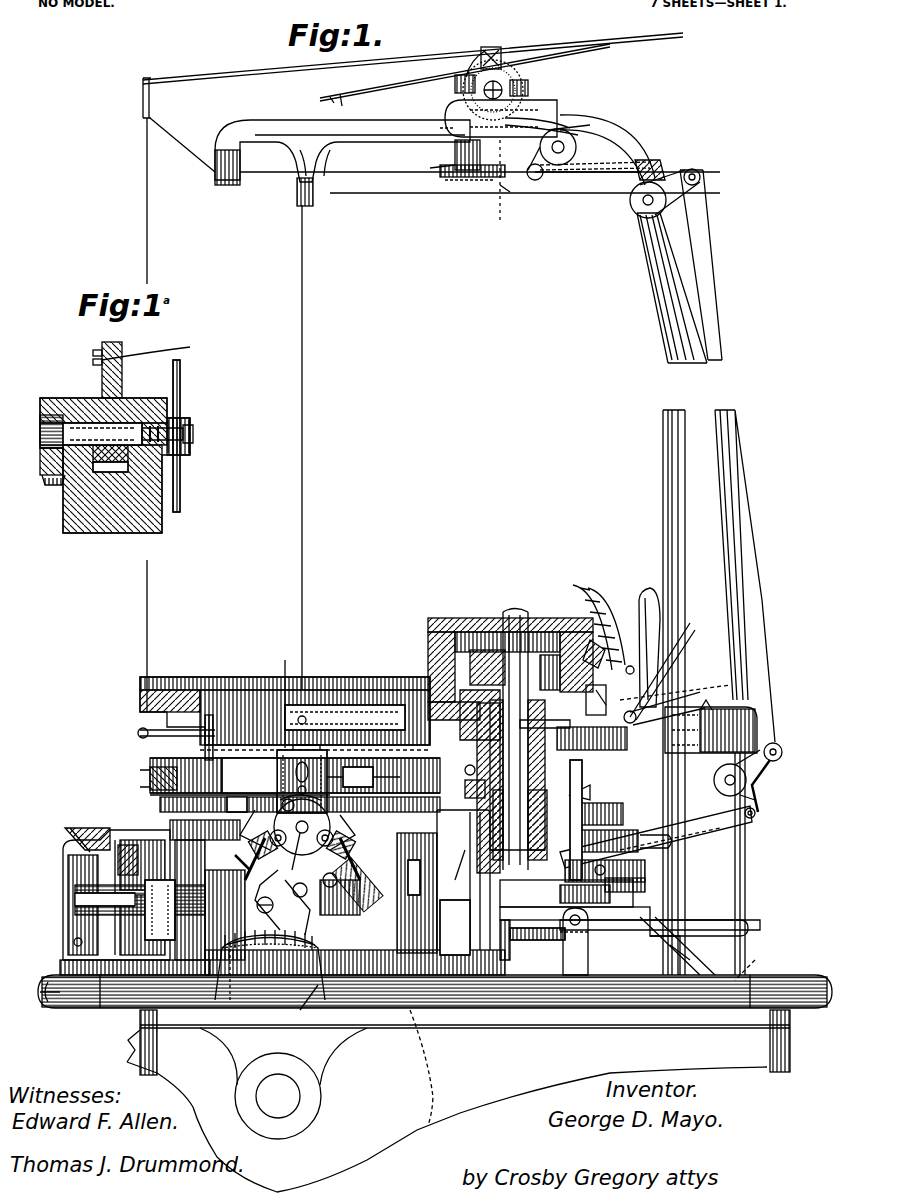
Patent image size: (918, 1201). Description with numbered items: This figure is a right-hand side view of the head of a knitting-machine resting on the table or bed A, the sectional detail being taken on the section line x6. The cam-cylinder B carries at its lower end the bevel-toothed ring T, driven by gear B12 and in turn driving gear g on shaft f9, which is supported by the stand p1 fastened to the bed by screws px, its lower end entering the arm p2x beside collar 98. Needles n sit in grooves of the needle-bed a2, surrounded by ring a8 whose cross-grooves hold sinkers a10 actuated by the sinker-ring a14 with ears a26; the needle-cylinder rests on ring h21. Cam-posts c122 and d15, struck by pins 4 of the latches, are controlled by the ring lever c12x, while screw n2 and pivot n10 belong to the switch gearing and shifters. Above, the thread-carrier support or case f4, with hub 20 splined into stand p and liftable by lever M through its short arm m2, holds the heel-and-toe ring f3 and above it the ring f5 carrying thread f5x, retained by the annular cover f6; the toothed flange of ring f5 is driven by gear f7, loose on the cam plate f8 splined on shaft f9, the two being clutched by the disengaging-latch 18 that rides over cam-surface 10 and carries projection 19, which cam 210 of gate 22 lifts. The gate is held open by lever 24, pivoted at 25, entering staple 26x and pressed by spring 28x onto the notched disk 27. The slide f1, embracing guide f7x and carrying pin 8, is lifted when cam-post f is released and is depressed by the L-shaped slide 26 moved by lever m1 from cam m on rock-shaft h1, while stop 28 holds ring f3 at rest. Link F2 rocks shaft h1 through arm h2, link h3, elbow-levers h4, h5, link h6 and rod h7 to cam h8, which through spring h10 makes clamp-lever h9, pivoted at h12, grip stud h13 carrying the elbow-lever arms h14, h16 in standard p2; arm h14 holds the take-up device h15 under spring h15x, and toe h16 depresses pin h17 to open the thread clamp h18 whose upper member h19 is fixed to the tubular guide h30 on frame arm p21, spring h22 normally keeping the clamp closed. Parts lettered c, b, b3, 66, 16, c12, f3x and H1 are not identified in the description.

In FIG. 1, the take-up device h15 is at (215, 64).
In FIG. 1A, the take-up device h15 is at (158, 394).
In FIG. 1, the spring h15x is at (326, 102).
In FIG. 1A, the spring h15x is at (180, 387).
In FIG. 1, the stationary frame arm p21 is at (248, 118).
In FIG. 1, the arm of elbow-lever h14 is at (495, 45).
In FIG. 1A, the arm of elbow-lever h14 is at (122, 352).
In FIG. 1, the toe arm of elbow-lever h16 is at (460, 75).
In FIG. 1, the short stud h13 is at (505, 96).
In FIG. 1A, the short stud h13 is at (60, 432).
In FIG. 1, the pivot of clamp-lever h12 is at (447, 104).
In FIG. 1, the clamp-lever h9 is at (545, 118).
In FIG. 1A, the clamp-lever h9 is at (43, 468).
In FIG. 1, the spring h10 is at (570, 150).
In FIG. 1A, the spring h10 is at (50, 488).
In FIG. 1, the cam h8 is at (605, 140).
In FIG. 1, the pin h17 is at (440, 128).
In FIG. 1, the upper clamp member h19 is at (430, 168).
In FIG. 1, the tubular guide h30 is at (483, 150).
In FIG. 1, the thread clamp or tension device h18 is at (445, 182).
In FIG. 1, the spiral spring h22 is at (477, 202).
In FIG. 1, the section line x6 is at (502, 194).
In FIG. 1, the short rod h7 is at (582, 175).
In FIG. 1, the elbow-lever h5 is at (648, 208).
In FIG. 1, the link h6 is at (762, 575).
In FIG. 1, the standard p2 is at (665, 470).
In FIG. 1, the cam-post f is at (390, 1040).
In FIG. 1, the hand-operated lever M is at (640, 595).
In FIG. 1, the thread for circular knitting f5x is at (305, 446).
In FIG. 1, the thread-carrier support or case f4 is at (375, 690).
In FIG. 1, the annular cover f6 is at (165, 677).
In FIG. 1, the thread carrier or ring f5 is at (205, 680).
In FIG. 1, the guide f7x is at (281, 693).
In FIG. 1, the gear f7 is at (430, 680).
In FIG. 1, the projection of disengaging-latch 19 is at (428, 662).
In FIG. 1, the pin f3x is at (205, 735).
In FIG. 1, the thread carrier or ring f3 is at (315, 750).
In FIG. 1, the needles n is at (327, 752).
In FIG. 1, the jacks or sinkers a10 is at (200, 735).
In FIG. 1, the slide f1 is at (285, 775).
In FIG. 1, the actuating-ears a26 is at (150, 776).
In FIG. 1, the sinker-ring a14 is at (150, 795).
In FIG. 1, the ring a8 is at (195, 800).
In FIG. 1, the needle-bed a2 is at (190, 825).
In FIG. 1, the wheel c is at (262, 825).
In FIG. 1, the projecting pins of depressor-latches 4 is at (241, 855).
In FIG. 1, the pin of slide 8 is at (295, 805).
In FIG. 1, the screw b3 is at (254, 901).
In FIG. 1, the screws 66 is at (315, 891).
In FIG. 1, the arm b is at (313, 896).
In FIG. 1, the cam-post d15 is at (81, 829).
In FIG. 1, the screw n2 is at (120, 862).
In FIG. 1, the pivot of switch-shifters n10 is at (75, 893).
In FIG. 1, the bevel-toothed ring T is at (270, 965).
In FIG. 1, the toothed gear B12 is at (435, 1128).
In FIG. 1, the table or bed A is at (785, 978).
In FIG. 1, the bracket H1 is at (458, 1101).
In FIG. 1, the cam-post c122 is at (305, 1010).
In FIG. 1, the cam plate f8 is at (495, 618).
In FIG. 1, the shaft f9 is at (527, 618).
In FIG. 1, the disengaging-latch 18 is at (545, 650).
In FIG. 1, the cam-surface 10 is at (580, 588).
In FIG. 1, the gate 22 is at (610, 642).
In FIG. 1, the cam 210 is at (603, 685).
In FIG. 1, the block 16 is at (596, 690).
In FIG. 1, the staple 26x is at (668, 668).
In FIG. 1, the spring 28x is at (640, 690).
In FIG. 1, the stop 28 is at (465, 745).
In FIG. 1, the lever 24 is at (660, 698).
In FIG. 1, the pivot of lever 25 is at (670, 710).
In FIG. 1, the disk 27 is at (470, 785).
In FIG. 1, the L-shaped slide 26 is at (462, 767).
In FIG. 1, the stand p1 is at (745, 725).
In FIG. 1, the elbow-lever h4 is at (760, 772).
In FIG. 1, the link h3 is at (720, 825).
In FIG. 1, the vertical rock-shaft h1 is at (600, 785).
In FIG. 1, the cam m is at (590, 800).
In FIG. 1, the lever m1 is at (595, 835).
In FIG. 1, the stand p is at (568, 820).
In FIG. 1, the arm h2 is at (630, 870).
In FIG. 1, the short arm of lever m2 is at (628, 875).
In FIG. 1, the hub 20 is at (480, 812).
In FIG. 1, the cam-cylinder B is at (425, 865).
In FIG. 1, the collar 98 is at (563, 848).
In FIG. 1, the link F2 is at (580, 915).
In FIG. 1, the arm p2x is at (640, 918).
In FIG. 1, the gear g is at (562, 930).
In FIG. 1, the link c12 is at (670, 945).
In FIG. 1, the lever c12x is at (675, 925).
In FIG. 1, the screws px is at (750, 958).
In FIG. 1A, the ring h21 is at (150, 525).